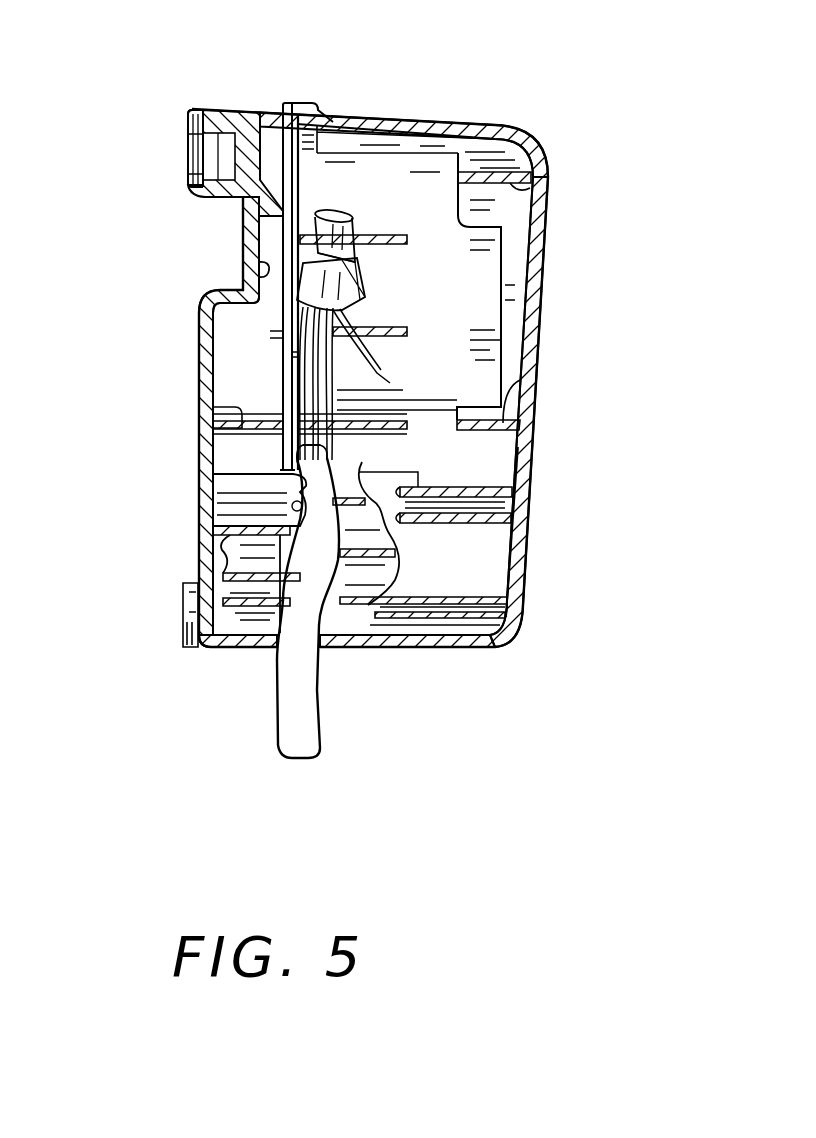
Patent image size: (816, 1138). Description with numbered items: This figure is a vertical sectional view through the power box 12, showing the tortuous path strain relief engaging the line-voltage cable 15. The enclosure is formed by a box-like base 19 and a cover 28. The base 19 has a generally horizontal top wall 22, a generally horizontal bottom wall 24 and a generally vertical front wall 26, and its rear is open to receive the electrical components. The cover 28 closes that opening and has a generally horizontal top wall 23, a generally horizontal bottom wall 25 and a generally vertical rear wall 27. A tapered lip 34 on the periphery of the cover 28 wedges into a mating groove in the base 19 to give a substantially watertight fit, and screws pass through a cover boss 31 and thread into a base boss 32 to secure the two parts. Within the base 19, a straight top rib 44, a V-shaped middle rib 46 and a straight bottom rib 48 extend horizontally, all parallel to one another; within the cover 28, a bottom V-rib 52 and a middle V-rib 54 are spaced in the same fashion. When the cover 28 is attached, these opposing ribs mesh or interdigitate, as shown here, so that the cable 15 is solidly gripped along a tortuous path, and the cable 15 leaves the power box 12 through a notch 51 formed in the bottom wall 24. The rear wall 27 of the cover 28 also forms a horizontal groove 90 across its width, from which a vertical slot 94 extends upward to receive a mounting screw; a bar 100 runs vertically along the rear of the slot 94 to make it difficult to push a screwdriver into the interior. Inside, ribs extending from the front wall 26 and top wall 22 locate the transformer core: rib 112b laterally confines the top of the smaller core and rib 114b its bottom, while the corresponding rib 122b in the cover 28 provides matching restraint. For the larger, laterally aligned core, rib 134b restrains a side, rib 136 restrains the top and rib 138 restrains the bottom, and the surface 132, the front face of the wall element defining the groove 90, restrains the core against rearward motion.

The power box 12 is at (270, 68).
The 120 VAC cable 15 is at (280, 730).
The base 19 is at (530, 124).
The top wall 22 is at (386, 118).
The top wall 23 is at (238, 112).
The bottom wall 24 is at (450, 650).
The bottom wall 25 is at (228, 657).
The front wall 26 is at (541, 258).
The rear wall 27 is at (200, 356).
The cover 28 is at (190, 102).
The cover boss 31 is at (230, 478).
The base boss 32 is at (515, 490).
The tapered lip 34 is at (300, 112).
The top rib 44 is at (345, 472).
The middle rib 46 is at (397, 532).
The bottom rib 48 is at (362, 652).
The notch 51 is at (324, 672).
The bottom V-rib 52 is at (257, 582).
The middle V-rib 54 is at (228, 544).
The horizontal groove 90 is at (235, 236).
The vertical slot 94 is at (183, 172).
The bar 100 is at (248, 162).
The rib 112b is at (547, 188).
The rib 114b is at (545, 395).
The rib 122b is at (228, 412).
The surface 132 is at (243, 268).
The rib 134b is at (400, 450).
The rib 136 is at (447, 142).
The rib 138 is at (400, 478).